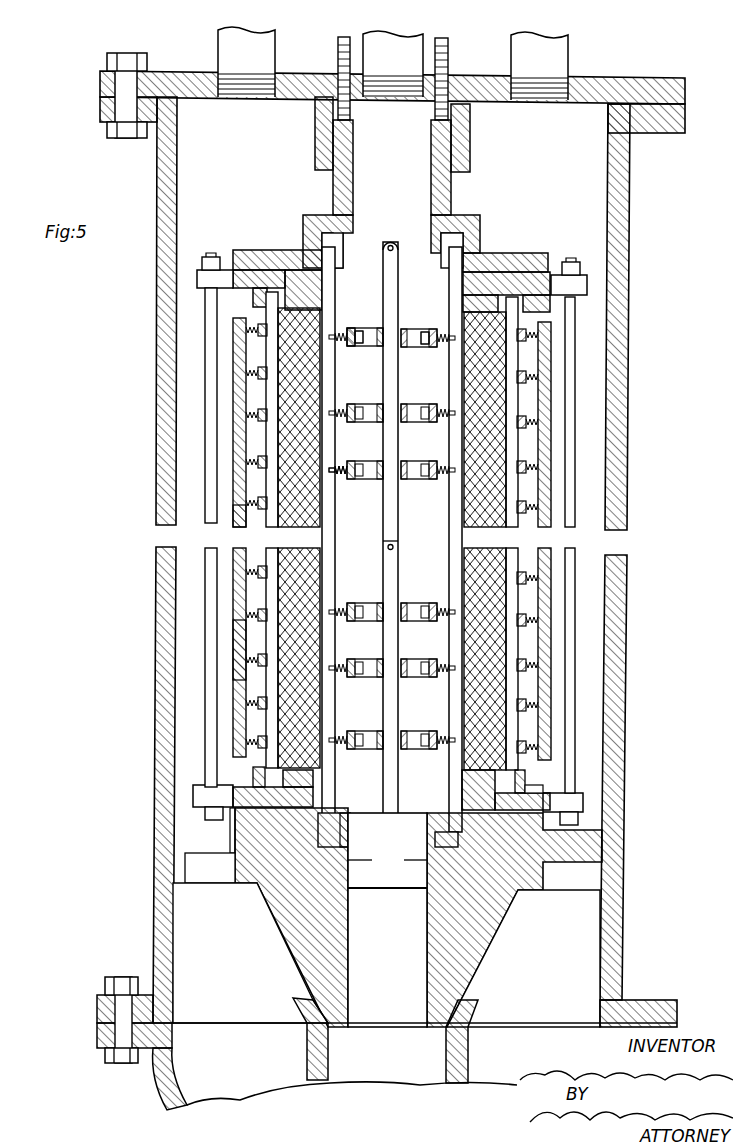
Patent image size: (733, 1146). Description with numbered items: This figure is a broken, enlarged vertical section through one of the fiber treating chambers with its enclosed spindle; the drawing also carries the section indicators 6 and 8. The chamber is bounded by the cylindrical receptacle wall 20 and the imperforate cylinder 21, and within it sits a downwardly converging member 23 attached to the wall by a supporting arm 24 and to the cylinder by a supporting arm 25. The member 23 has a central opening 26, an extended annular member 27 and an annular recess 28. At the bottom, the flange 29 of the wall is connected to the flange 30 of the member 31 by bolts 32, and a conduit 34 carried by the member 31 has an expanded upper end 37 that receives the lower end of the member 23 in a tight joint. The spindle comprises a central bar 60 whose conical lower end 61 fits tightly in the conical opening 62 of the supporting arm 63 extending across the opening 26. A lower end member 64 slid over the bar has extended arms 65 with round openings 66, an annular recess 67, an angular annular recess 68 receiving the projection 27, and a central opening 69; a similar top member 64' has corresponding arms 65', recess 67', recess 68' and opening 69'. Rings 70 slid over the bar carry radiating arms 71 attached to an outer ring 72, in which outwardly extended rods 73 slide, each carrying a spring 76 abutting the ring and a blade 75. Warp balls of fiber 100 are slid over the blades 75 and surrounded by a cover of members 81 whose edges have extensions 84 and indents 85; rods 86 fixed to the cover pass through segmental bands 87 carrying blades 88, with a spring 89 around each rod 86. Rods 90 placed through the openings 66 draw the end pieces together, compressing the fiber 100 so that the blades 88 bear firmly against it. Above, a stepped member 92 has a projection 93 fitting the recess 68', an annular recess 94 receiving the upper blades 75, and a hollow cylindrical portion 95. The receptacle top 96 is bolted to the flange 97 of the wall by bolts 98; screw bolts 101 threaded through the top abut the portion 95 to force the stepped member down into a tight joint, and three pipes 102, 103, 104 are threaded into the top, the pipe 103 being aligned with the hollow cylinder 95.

The cylindrical receptacle wall 20 is at (157, 320).
The imperforate cylinder 21 is at (630, 310).
The downwardly converging member 23 is at (288, 930).
The supporting arm 24 is at (212, 883).
The supporting arm 25 is at (572, 890).
The central opening 26 is at (387, 920).
The extended annular member 27 is at (541, 777).
The annular recess 28 is at (336, 820).
The flange 29 is at (97, 1008).
The flange 30 is at (97, 1034).
The member 31 is at (165, 1100).
The bolt 32 is at (122, 977).
The conduit 34 is at (307, 1057).
The upper end 37 is at (293, 1003).
The central bar 60 is at (386, 548).
The lower end 61 is at (402, 855).
The conical opening 62 is at (378, 858).
The supporting arm 63 is at (368, 888).
The end member 64 is at (220, 830).
The top member 64' is at (277, 247).
The extended arm 65 is at (391, 794).
The extended arm 65' is at (392, 249).
The round opening 66 is at (208, 288).
The annular recess 67 is at (410, 762).
The annular recess 67' is at (392, 238).
The angular annular recess 68 is at (386, 787).
The angular annular recess 68' is at (396, 259).
The central opening 69 is at (389, 787).
The central opening 69' is at (417, 291).
The ring 70 is at (405, 330).
The radiating arm 71 is at (362, 334).
The ring 72 is at (350, 328).
The rod 73 is at (338, 480).
The blade 75 is at (335, 376).
The spring 76 is at (345, 478).
The cover member 81 is at (238, 527).
The extension 84 is at (238, 640).
The indent 85 is at (256, 622).
The rod 86 is at (258, 504).
The segmental band 87 is at (272, 527).
The blade 88 is at (246, 474).
The spring 89 is at (258, 512).
The rod 90 is at (205, 410).
The stepped member 92 is at (470, 222).
The projection 93 is at (508, 265).
The annular recess 94 is at (315, 215).
The hollow cylindrical portion 95 is at (333, 168).
The receptacle top 96 is at (176, 71).
The flange 97 is at (100, 115).
The bolt 98 is at (126, 53).
The warp ball 100 is at (320, 428).
The screw bolt 101 is at (338, 50).
The pipe 102 is at (240, 40).
The pipe 103 is at (393, 64).
The pipe 104 is at (539, 66).
The section line 6 is at (200, 262).
The section line 8 is at (198, 745).